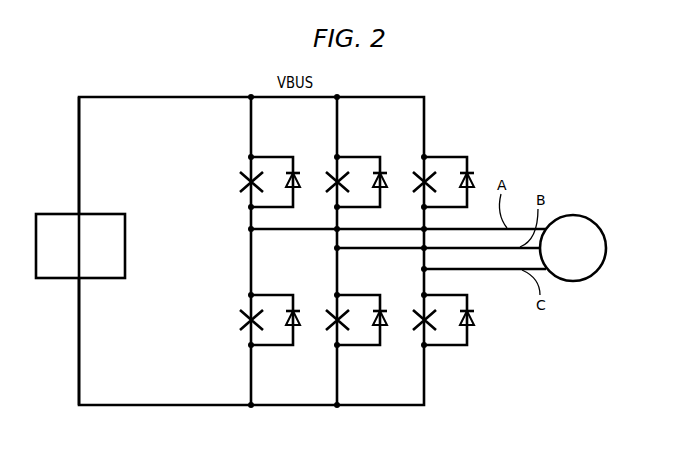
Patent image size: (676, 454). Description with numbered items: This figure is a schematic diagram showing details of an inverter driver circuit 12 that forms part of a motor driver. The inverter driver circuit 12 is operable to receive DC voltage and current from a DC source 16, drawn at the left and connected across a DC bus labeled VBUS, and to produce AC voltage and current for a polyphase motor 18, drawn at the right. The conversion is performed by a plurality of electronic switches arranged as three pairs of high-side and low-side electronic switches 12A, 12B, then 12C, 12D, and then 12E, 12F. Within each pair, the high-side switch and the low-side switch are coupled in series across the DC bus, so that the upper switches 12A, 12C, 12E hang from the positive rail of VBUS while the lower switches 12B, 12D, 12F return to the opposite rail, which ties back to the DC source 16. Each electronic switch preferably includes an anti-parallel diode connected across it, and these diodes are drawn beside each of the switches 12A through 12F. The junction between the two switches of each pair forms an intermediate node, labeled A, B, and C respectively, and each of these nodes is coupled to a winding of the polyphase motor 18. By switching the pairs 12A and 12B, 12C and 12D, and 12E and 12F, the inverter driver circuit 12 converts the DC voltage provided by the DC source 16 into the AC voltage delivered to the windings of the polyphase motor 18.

The inverter driver circuit 12 is at (547, 150).
The high-side electronic switch 12A is at (236, 181).
The low-side electronic switch 12B is at (237, 318).
The high-side electronic switch 12C is at (323, 181).
The low-side electronic switch 12D is at (324, 318).
The high-side electronic switch 12E is at (410, 181).
The low-side electronic switch 12F is at (411, 318).
The DC source 16 is at (128, 238).
The polyphase motor 18 is at (592, 220).